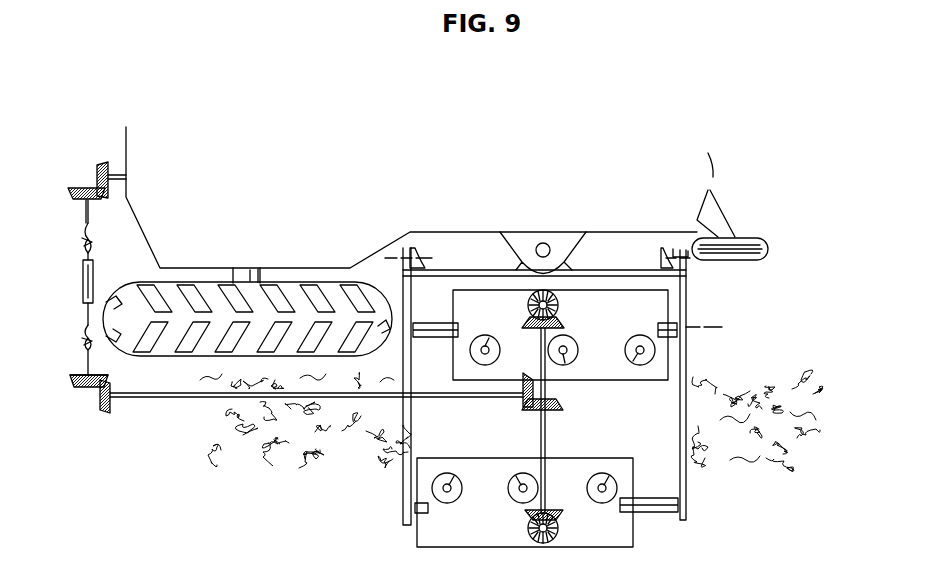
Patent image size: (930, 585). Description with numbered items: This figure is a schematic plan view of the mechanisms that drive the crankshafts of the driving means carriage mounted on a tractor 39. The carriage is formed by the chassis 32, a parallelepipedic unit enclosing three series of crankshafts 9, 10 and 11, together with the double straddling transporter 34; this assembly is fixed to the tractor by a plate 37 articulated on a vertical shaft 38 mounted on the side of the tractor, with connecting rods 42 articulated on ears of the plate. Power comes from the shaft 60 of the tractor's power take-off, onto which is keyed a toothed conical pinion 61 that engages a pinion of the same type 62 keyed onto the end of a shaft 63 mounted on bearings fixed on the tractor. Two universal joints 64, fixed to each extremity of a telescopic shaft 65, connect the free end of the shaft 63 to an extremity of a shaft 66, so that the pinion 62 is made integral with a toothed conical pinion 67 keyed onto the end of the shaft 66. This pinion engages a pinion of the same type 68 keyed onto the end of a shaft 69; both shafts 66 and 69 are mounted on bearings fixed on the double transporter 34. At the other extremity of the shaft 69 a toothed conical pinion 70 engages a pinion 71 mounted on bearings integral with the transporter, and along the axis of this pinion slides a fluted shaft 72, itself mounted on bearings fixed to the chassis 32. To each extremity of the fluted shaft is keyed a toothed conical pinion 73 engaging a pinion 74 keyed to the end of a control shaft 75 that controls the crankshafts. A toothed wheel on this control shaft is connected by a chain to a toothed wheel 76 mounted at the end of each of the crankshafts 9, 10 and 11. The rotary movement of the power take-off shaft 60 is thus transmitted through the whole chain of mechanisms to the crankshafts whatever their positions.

The crankshaft 9 is at (628, 360).
The crankshaft 10 is at (577, 346).
The crankshaft 11 is at (500, 348).
The chassis 32 is at (490, 533).
The double straddling transporter 34 is at (680, 425).
The plate 37 is at (628, 269).
The vertical shaft 38 is at (543, 242).
The tractor 39 is at (434, 182).
The connecting rod 42 is at (687, 282).
The power take-off shaft 60 is at (115, 175).
The toothed conical pinion 61 is at (106, 143).
The toothed conical pinion 62 is at (73, 189).
The shaft 63 is at (88, 216).
The universal joint 64 is at (92, 242).
The telescopic shaft 65 is at (94, 286).
The shaft 66 is at (87, 373).
The toothed conical pinion 67 is at (81, 388).
The toothed conical pinion 68 is at (102, 410).
The shaft 69 is at (200, 397).
The toothed conical pinion 70 is at (523, 404).
The toothed conical pinion 71 is at (537, 412).
The fluted shaft 72 is at (547, 429).
The toothed conical pinion 73 is at (563, 322).
The toothed conical pinion 74 is at (562, 304).
The control shaft 75 is at (525, 306).
The toothed wheel 76 is at (488, 341).